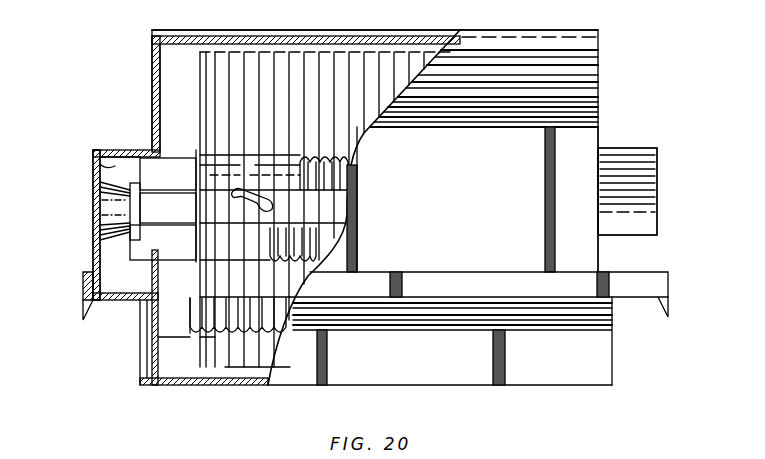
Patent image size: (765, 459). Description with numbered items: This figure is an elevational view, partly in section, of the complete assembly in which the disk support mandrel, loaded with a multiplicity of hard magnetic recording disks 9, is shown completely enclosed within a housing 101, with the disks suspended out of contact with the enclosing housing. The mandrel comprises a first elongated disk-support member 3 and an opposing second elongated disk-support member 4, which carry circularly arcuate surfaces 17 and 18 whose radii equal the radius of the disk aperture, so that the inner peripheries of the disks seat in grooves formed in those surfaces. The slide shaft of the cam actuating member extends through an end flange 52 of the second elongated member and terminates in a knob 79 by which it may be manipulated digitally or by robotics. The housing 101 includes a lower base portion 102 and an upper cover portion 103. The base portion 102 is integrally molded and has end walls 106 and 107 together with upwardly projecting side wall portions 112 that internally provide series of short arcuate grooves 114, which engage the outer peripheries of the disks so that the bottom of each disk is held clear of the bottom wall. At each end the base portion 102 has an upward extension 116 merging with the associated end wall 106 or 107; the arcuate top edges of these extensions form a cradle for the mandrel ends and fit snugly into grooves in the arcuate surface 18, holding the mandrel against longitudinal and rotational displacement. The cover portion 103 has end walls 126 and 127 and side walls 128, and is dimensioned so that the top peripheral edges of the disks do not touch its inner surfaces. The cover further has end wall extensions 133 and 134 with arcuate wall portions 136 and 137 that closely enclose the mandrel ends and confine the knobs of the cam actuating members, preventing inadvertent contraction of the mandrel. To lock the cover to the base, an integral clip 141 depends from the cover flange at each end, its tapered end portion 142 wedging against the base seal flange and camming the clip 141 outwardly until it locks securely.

The hard magnetic recording disks 9 is at (198, 70).
The housing 101 is at (335, 165).
The end wall 126 is at (152, 135).
The arcuate wall portion 136 is at (112, 166).
The end wall extension 133 is at (91, 188).
The knob 79 is at (102, 223).
The first elongated disk-support member 3 is at (187, 150).
The circularly arcuate surface 17 is at (182, 185).
The end flange 52 is at (138, 201).
The circularly arcuate surface 18 is at (190, 255).
The second elongated disk-support member 4 is at (166, 262).
The upward extension 116 is at (152, 272).
The clip 141 is at (83, 290).
The tapered end portion 142 is at (86, 304).
The side wall portion 112 is at (175, 310).
The lower base portion 102 is at (338, 324).
The end wall 106 is at (152, 370).
The grooves 114 is at (192, 338).
The upper cover portion 103 is at (598, 88).
The end wall 127 is at (598, 137).
The side wall 128 is at (514, 191).
The arcuate wall portion 137 is at (647, 188).
The end wall extension 134 is at (660, 218).
The end wall 107 is at (613, 313).